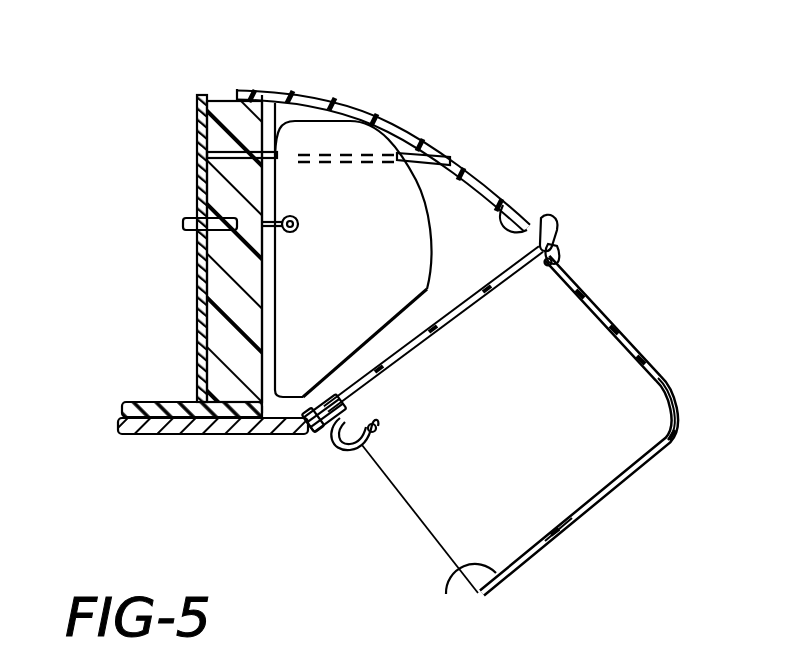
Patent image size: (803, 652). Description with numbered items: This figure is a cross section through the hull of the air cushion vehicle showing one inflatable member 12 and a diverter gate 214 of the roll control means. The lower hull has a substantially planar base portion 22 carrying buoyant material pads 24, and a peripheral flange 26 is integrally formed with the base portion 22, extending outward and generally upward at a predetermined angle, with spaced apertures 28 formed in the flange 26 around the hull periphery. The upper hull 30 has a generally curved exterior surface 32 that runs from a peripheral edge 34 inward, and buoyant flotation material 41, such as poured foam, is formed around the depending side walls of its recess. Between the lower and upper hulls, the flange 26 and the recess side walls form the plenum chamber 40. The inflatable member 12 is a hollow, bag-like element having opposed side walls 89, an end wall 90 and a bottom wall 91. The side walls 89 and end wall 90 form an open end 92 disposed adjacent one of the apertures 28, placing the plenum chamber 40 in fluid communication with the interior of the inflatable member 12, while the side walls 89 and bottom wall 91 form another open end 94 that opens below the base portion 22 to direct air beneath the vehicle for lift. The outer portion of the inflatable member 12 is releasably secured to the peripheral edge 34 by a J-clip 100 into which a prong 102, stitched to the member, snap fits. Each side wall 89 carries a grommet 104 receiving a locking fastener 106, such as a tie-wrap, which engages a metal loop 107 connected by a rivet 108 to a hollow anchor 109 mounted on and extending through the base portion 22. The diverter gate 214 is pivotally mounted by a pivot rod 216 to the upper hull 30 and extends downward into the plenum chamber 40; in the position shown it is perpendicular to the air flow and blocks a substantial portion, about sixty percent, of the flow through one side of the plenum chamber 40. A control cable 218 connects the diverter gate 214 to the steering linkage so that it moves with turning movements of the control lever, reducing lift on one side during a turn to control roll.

The inflatable member 12 is at (683, 490).
The base portion 22 is at (150, 440).
The buoyant material pads 24 is at (120, 412).
The peripheral flange 26 is at (400, 357).
The apertures 28 is at (471, 304).
The upper hull 30 is at (388, 77).
The exterior surface 32 is at (471, 190).
The peripheral edge 34 is at (546, 212).
The plenum chamber 40 is at (480, 176).
The buoyant flotation material 41 is at (195, 172).
The side walls 89 is at (637, 442).
The end wall 90 is at (664, 380).
The bottom wall 91 is at (567, 531).
The open end 92 is at (546, 272).
The open end 94 is at (458, 593).
The J-clip 100 is at (550, 224).
The prong 102 is at (558, 248).
The grommet 104 is at (385, 436).
The locking fastener 106 is at (360, 455).
The metal loop 107 is at (332, 455).
The rivet 108 is at (322, 396).
The hollow anchor 109 is at (312, 428).
The diverter gate 214 is at (292, 258).
The pivot rod 216 is at (270, 152).
The control cable 218 is at (187, 217).